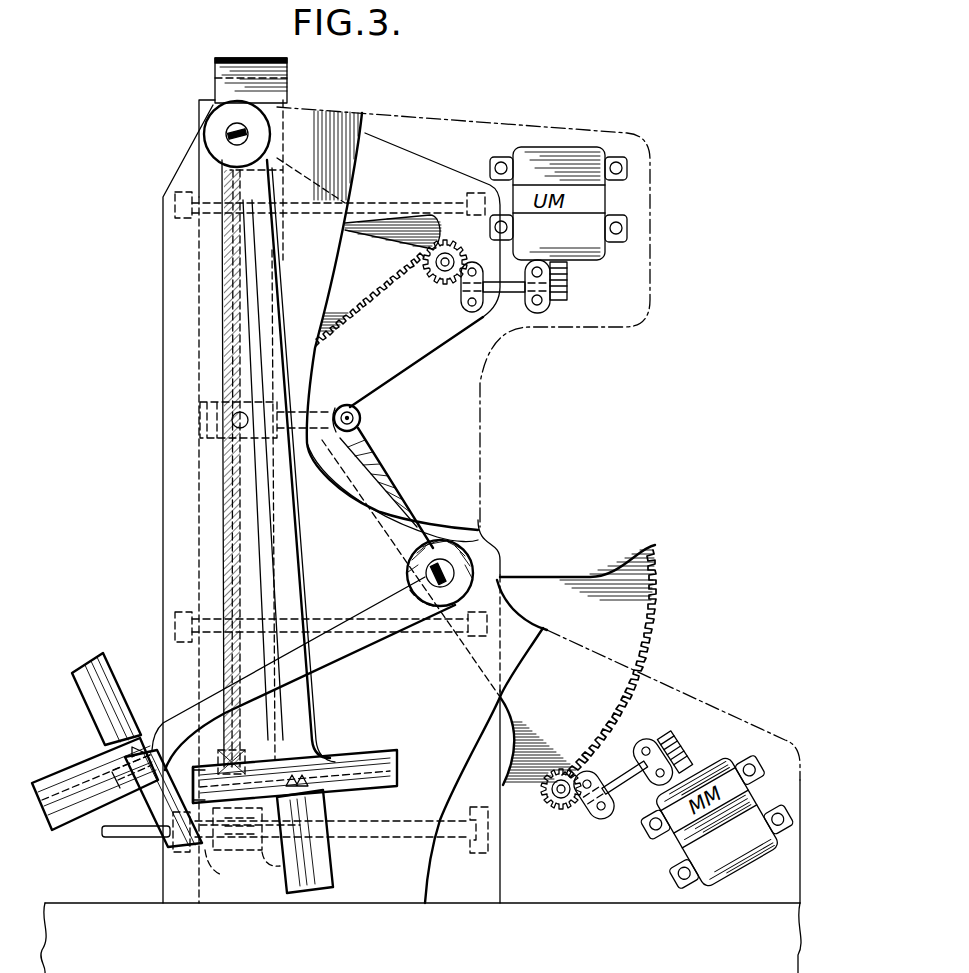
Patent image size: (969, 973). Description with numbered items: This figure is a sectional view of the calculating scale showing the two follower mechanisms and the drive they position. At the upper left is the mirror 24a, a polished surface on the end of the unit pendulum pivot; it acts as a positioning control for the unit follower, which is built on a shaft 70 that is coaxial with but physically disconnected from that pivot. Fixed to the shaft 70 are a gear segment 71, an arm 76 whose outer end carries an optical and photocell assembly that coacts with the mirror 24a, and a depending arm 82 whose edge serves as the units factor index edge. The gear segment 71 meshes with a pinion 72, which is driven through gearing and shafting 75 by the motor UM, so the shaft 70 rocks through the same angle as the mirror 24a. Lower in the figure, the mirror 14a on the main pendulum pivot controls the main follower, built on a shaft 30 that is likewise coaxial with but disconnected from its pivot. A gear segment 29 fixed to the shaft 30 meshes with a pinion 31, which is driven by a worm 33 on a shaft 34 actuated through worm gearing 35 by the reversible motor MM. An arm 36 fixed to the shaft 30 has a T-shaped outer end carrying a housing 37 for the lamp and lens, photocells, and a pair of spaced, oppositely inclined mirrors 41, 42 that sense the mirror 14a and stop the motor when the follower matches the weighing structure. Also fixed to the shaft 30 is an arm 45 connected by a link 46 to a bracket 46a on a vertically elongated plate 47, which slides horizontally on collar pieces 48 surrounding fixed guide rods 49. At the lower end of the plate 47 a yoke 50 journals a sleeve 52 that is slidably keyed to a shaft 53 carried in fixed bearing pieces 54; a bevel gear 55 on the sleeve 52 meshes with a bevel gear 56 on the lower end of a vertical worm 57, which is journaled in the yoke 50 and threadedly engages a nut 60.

The mirror 24a is at (230, 134).
The shaft 70 is at (247, 127).
The depending arm 82 is at (287, 236).
The arm 76 is at (293, 555).
The worm 57 is at (226, 657).
The plate 47 is at (203, 502).
The bracket 46a is at (213, 400).
The collar pieces 48 is at (205, 220).
The guide rods 49 is at (433, 200).
The pinion 72 is at (428, 278).
The gear segment 71 is at (396, 303).
The gearing and shafting 75 is at (513, 300).
The link 46 is at (321, 412).
The arm 45 is at (393, 455).
The mirror 14a is at (437, 570).
The shaft 30 is at (440, 607).
The gear segment 29 is at (590, 578).
The arm 36 is at (347, 657).
The nut 60 is at (255, 768).
The bevel gear 56 is at (191, 785).
The bevel gear 55 is at (322, 814).
The sleeve 52 is at (240, 850).
The yoke 50 is at (268, 868).
The shaft 53 is at (131, 838).
The bearing pieces 54 is at (186, 858).
The mirror 41 is at (100, 756).
The housing 37 is at (65, 782).
The mirror 42 is at (128, 782).
The pinion 31 is at (548, 803).
The worm 33 is at (572, 812).
The shaft 34 is at (618, 779).
The worm gearing 35 is at (683, 737).